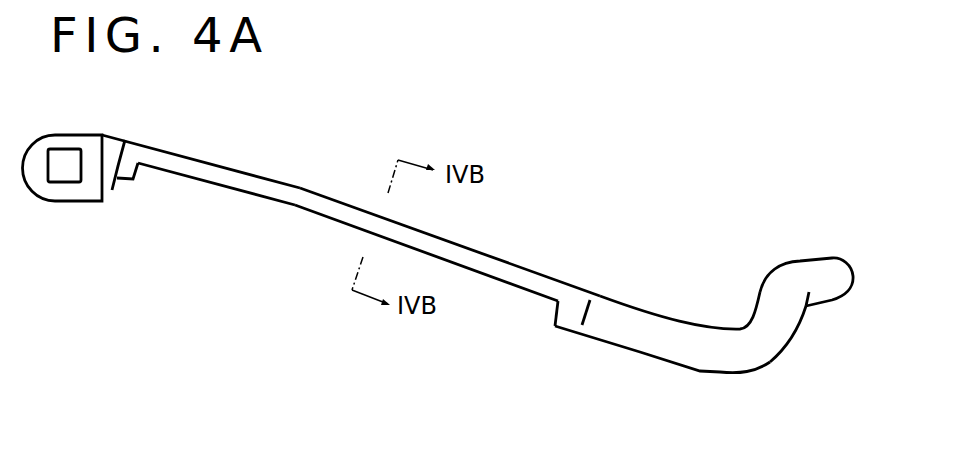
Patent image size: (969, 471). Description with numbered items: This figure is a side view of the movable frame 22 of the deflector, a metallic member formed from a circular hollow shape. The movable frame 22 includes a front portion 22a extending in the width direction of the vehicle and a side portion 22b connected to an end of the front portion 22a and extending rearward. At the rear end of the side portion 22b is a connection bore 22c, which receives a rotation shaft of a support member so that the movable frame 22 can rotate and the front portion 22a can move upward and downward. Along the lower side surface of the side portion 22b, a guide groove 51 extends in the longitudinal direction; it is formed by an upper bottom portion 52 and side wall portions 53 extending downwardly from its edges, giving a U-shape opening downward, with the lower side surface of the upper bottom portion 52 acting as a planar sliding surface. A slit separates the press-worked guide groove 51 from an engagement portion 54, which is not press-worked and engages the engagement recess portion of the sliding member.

The movable frame 22 is at (658, 133).
The front portion 22a is at (843, 268).
The side portion 22b is at (659, 352).
The connection bore 22c is at (66, 176).
The guide groove 51 is at (483, 277).
The upper bottom portion 52 is at (500, 262).
The side wall portion 53 is at (222, 183).
The engagement portion 54 is at (555, 327).